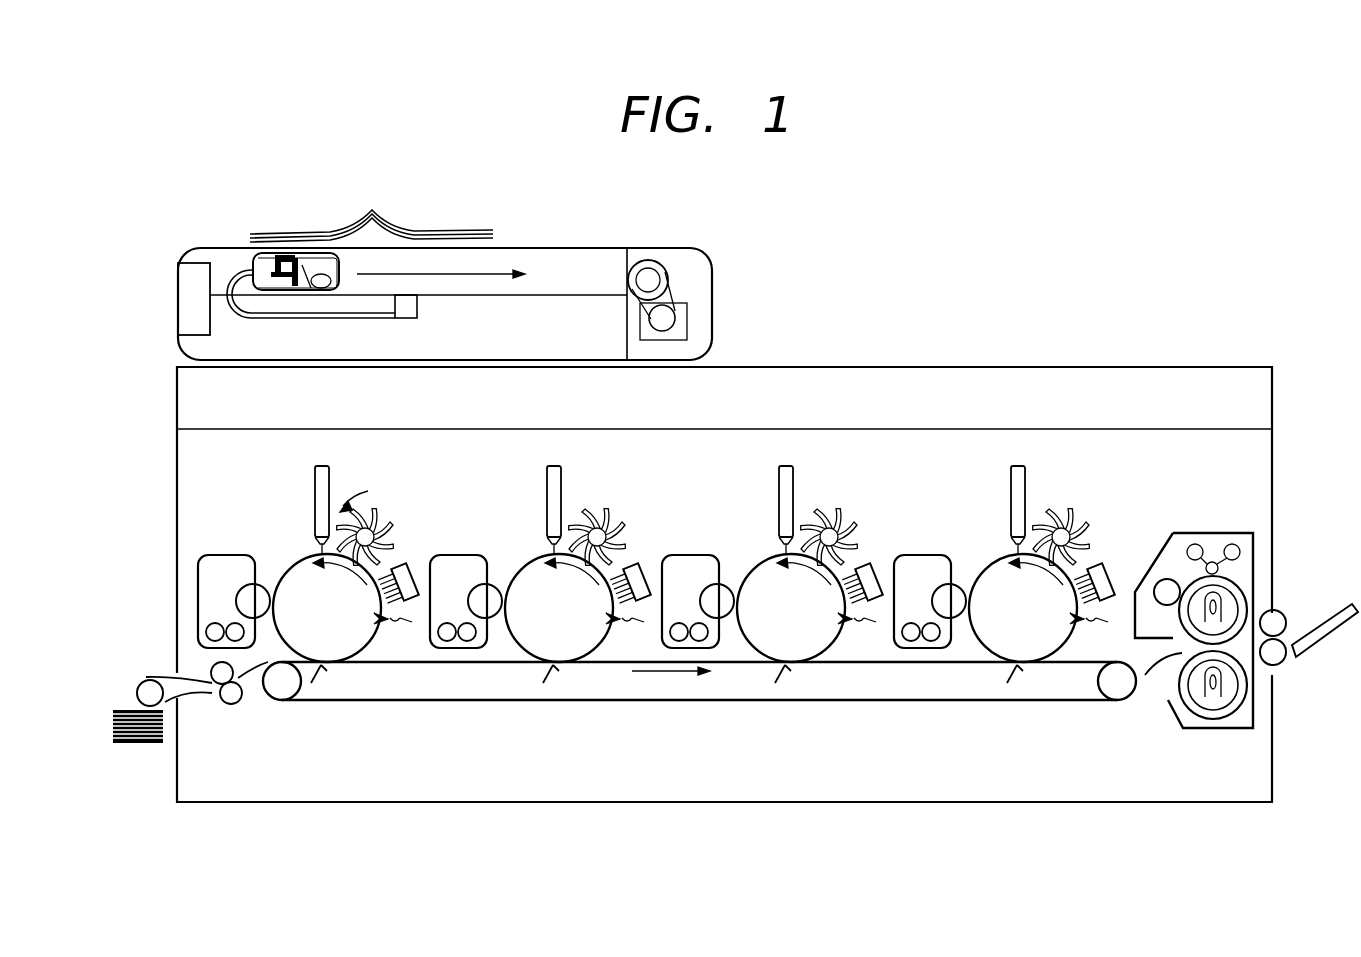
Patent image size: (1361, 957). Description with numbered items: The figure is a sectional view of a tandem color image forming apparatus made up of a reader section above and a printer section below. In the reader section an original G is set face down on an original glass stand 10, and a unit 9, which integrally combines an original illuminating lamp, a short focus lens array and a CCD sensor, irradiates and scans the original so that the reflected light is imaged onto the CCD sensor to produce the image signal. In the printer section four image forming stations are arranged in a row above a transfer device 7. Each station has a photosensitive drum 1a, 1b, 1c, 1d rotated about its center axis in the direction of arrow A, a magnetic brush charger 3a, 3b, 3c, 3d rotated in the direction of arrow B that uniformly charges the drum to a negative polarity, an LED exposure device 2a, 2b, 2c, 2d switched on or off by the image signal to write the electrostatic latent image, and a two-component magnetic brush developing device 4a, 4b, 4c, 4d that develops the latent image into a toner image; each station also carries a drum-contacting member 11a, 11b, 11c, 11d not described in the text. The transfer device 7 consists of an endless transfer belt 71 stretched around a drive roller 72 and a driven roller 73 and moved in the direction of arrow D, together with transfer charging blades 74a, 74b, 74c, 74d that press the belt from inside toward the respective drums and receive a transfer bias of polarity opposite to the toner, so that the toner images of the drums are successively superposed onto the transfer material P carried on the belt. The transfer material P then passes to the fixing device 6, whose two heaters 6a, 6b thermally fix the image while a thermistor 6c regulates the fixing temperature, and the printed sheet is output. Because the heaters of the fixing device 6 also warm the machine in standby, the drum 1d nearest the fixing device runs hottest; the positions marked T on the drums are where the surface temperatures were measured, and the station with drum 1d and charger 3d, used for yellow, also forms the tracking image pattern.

The photosensitive drum 1a is at (368, 638).
The photosensitive drum 1b is at (600, 638).
The photosensitive drum 1c is at (832, 638).
The photosensitive drum 1d is at (1064, 638).
The LED exposure device 2a is at (314, 476).
The LED exposure device 2b is at (546, 476).
The LED exposure device 2c is at (778, 476).
The LED exposure device 2d is at (1010, 476).
The magnetic brush charger 3a is at (378, 516).
The magnetic brush charger 3b is at (610, 516).
The magnetic brush charger 3c is at (842, 516).
The magnetic brush charger 3d is at (1074, 516).
The developing device 4a is at (228, 555).
The developing device 4b is at (460, 555).
The developing device 4c is at (692, 555).
The developing device 4d is at (924, 555).
The cleaning blade 11a is at (408, 562).
The cleaning blade 11b is at (640, 562).
The cleaning blade 11c is at (872, 562).
The cleaning blade 11d is at (1104, 562).
The fixing device 6 is at (1210, 533).
The heater 6a is at (1224, 600).
The heater 6b is at (1230, 684).
The thermistor 6c is at (1168, 591).
The transfer device 7 is at (740, 688).
The transfer belt 71 is at (933, 700).
The drive roller 72 is at (276, 690).
The driven roller 73 is at (1122, 700).
The transfer charging blade 74a is at (320, 674).
The transfer charging blade 74b is at (552, 674).
The transfer charging blade 74c is at (784, 674).
The transfer charging blade 74d is at (1016, 674).
The unit 9 is at (251, 268).
The original glass stand 10 is at (715, 290).
The original G is at (406, 231).
The transfer material P is at (114, 708).
The direction of rotation of photosensitive drum A is at (340, 583).
The direction of rotation of magnetic brush charger B is at (354, 489).
The temperature measuring position T is at (748, 622).
The direction of rotation of transfer belt D is at (671, 684).